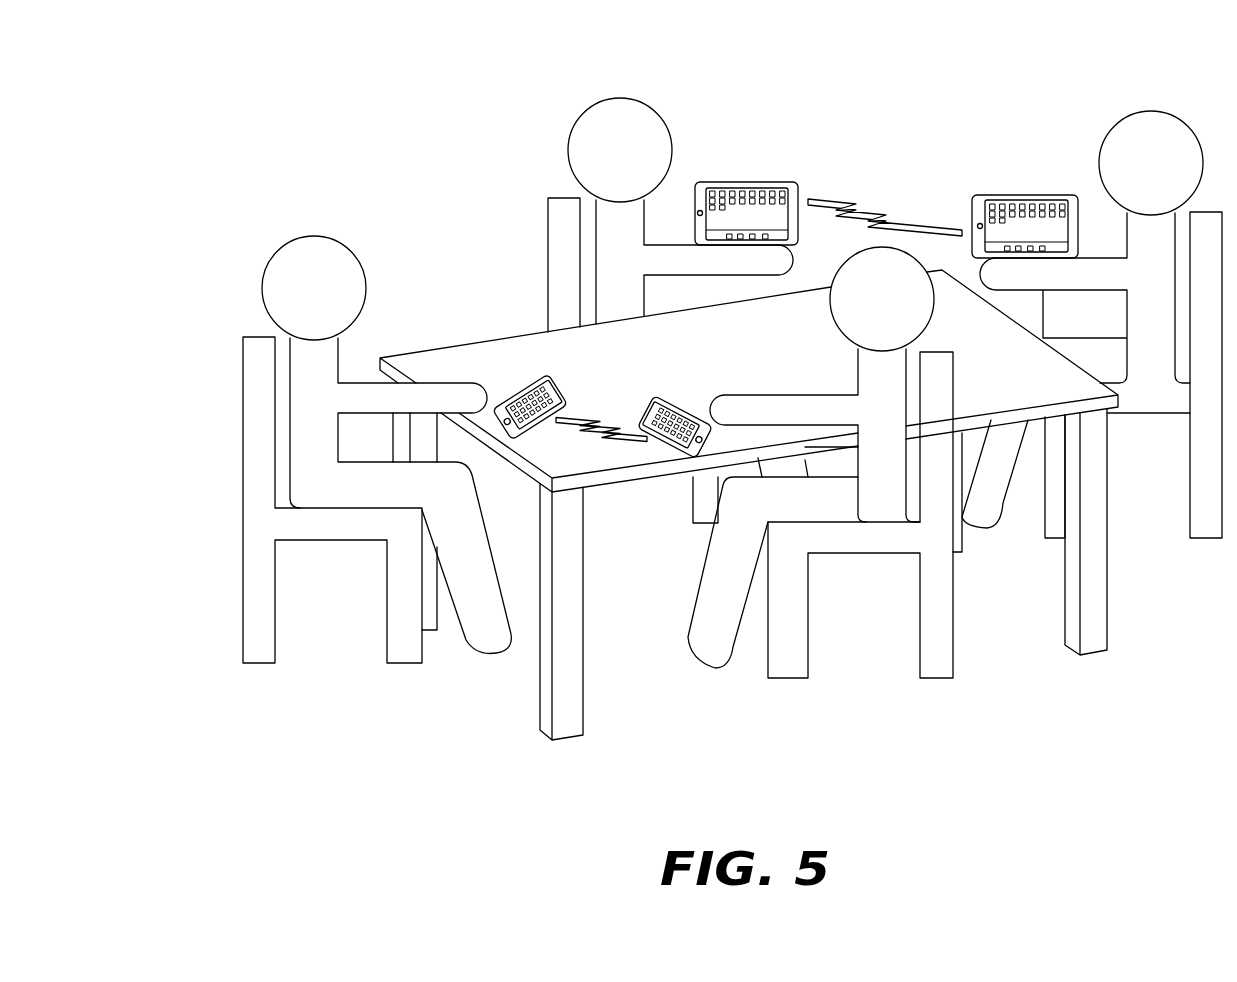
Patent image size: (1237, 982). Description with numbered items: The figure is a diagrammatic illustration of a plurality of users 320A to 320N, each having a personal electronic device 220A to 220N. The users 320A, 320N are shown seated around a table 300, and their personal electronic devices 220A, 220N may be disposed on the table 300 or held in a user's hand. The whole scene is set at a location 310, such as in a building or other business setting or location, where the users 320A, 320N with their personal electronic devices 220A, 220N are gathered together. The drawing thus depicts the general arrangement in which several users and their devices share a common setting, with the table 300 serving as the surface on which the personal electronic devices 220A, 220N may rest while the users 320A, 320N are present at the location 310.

The location 310 is at (375, 56).
The table 300 is at (440, 360).
The user 320A is at (272, 277).
The user 320N is at (845, 320).
The personal electronic device 220A is at (527, 400).
The personal electronic device 220N is at (683, 423).